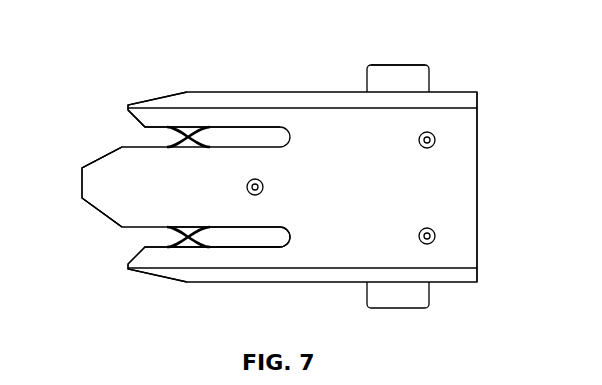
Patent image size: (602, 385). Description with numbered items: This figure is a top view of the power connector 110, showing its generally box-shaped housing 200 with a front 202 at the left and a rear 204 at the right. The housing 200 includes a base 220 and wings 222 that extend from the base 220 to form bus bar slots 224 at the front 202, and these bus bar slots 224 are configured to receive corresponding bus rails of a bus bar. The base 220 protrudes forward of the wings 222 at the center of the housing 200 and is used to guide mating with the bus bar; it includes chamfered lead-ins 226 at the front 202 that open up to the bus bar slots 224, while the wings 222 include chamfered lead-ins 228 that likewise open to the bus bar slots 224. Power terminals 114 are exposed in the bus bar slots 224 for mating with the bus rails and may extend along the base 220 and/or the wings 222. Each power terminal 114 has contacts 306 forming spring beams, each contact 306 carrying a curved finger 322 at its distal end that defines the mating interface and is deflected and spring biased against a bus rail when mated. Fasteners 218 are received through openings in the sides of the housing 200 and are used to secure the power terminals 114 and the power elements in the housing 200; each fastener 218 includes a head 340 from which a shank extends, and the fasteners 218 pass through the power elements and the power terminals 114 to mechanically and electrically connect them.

The power connector 110 is at (282, 172).
The housing 200 is at (317, 160).
The front 202 is at (79, 189).
The rear 204 is at (478, 232).
The fastener 218 is at (398, 64).
The base 220 is at (152, 202).
The wing 222 is at (165, 207).
The bus bar slot 224 is at (144, 238).
The chamfered lead-in 226 is at (100, 162).
The chamfered lead-in 228 is at (97, 120).
The contact 306 is at (217, 131).
The finger 322 is at (186, 132).
The power terminal 114 is at (183, 245).
The head 340 is at (417, 80).